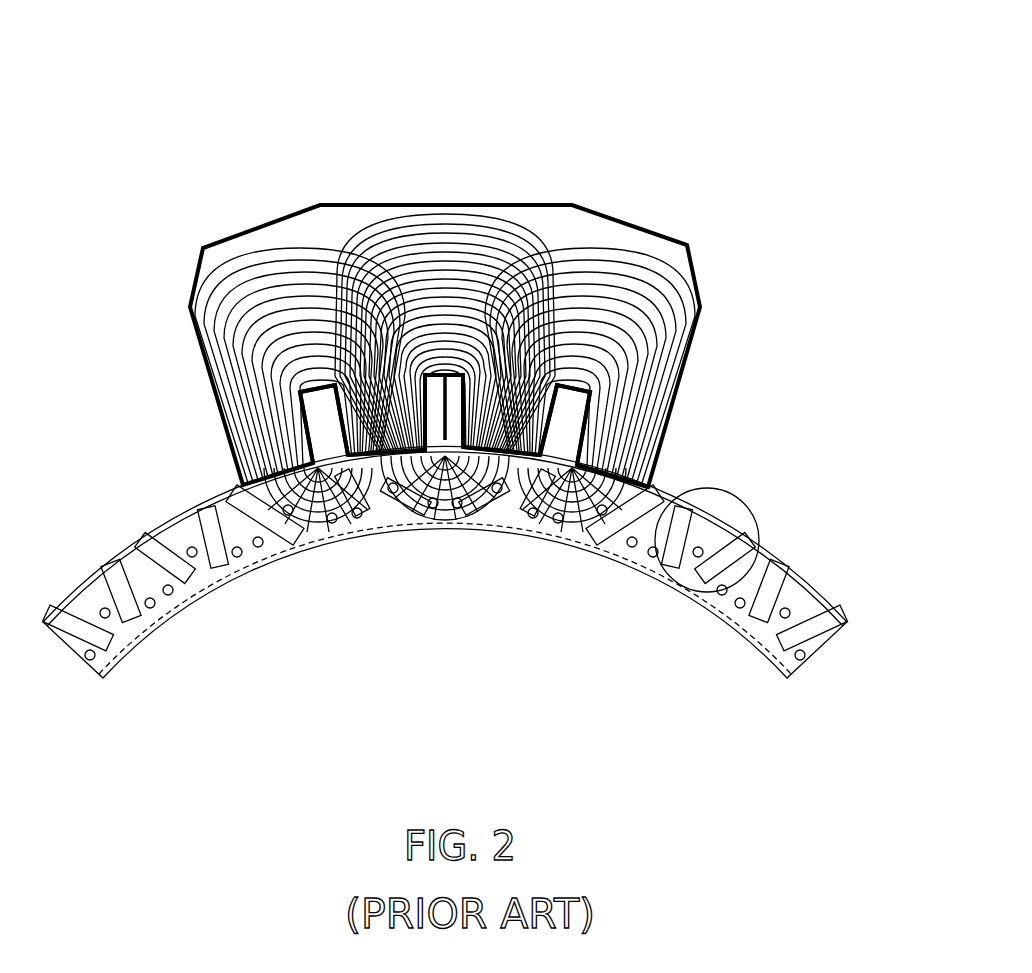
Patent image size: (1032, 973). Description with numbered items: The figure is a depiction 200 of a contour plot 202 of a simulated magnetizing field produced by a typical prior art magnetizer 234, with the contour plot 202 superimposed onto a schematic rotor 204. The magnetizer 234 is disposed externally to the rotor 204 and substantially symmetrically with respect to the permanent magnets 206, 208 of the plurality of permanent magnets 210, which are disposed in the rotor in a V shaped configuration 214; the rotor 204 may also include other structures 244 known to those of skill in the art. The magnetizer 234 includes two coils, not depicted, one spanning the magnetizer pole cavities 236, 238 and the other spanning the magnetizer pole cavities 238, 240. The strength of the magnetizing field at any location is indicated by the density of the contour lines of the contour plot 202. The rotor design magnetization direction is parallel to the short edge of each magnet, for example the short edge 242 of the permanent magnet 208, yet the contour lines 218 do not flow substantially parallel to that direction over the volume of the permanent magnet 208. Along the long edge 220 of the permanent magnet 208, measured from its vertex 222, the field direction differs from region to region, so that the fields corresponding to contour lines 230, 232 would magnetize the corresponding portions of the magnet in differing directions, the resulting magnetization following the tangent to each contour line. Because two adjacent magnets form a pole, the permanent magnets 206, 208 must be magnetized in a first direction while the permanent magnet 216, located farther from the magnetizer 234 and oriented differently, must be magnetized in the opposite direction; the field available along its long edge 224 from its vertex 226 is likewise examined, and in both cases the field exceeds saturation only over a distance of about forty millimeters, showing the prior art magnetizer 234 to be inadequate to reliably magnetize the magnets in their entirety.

The depiction 200 is at (756, 62).
The contour plot 202 is at (662, 300).
The rotor 204 is at (700, 608).
The permanent magnet 206 is at (388, 515).
The permanent magnet 208 is at (494, 530).
The plurality of permanent magnets 210 is at (798, 583).
The V shaped configuration 214 is at (733, 505).
The permanent magnet 216 is at (503, 501).
The contour lines 218 is at (428, 287).
The long edge 220 is at (463, 513).
The vertex 222 is at (447, 458).
The long edge 224 is at (540, 525).
The vertex 226 is at (563, 452).
The contour line 230 is at (427, 515).
The contour line 232 is at (286, 552).
The magnetizer 234 is at (428, 205).
The magnetizer pole cavity 236 is at (300, 390).
The magnetizer pole cavity 238 is at (443, 375).
The magnetizer pole cavity 240 is at (560, 383).
The short edge 242 is at (470, 428).
The other structures 244 is at (152, 608).